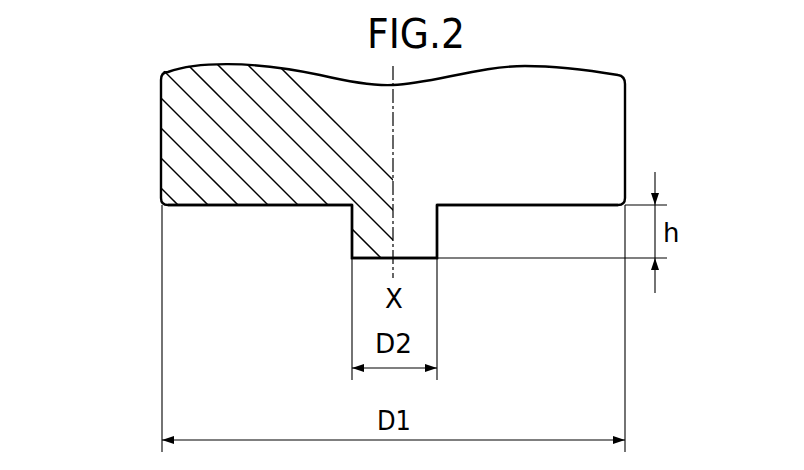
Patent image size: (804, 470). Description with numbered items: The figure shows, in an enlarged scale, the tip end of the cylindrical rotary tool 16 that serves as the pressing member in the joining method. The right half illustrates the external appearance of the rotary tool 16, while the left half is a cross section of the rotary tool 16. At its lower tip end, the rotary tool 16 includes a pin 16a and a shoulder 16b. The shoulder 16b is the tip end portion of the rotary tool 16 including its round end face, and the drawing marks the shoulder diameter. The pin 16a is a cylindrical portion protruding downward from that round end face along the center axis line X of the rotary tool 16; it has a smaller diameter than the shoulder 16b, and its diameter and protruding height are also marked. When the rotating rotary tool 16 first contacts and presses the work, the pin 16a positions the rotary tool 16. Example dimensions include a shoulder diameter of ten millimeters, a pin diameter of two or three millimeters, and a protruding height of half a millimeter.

The rotary tool 16 is at (143, 140).
The pin 16a is at (362, 260).
The shoulder 16b is at (292, 205).